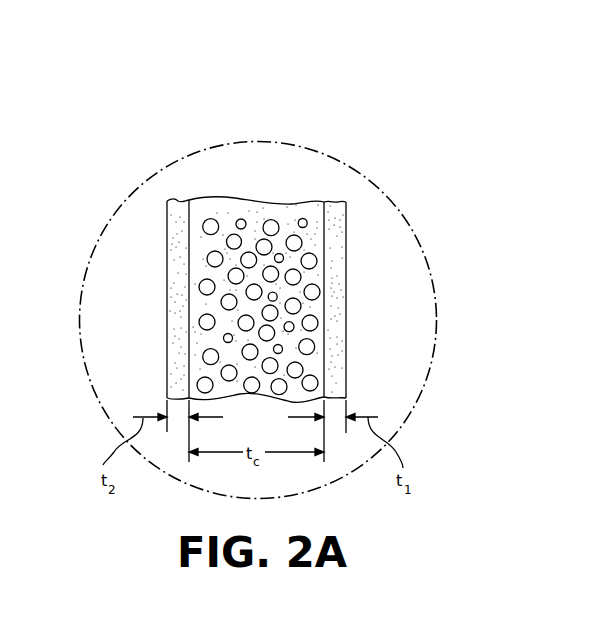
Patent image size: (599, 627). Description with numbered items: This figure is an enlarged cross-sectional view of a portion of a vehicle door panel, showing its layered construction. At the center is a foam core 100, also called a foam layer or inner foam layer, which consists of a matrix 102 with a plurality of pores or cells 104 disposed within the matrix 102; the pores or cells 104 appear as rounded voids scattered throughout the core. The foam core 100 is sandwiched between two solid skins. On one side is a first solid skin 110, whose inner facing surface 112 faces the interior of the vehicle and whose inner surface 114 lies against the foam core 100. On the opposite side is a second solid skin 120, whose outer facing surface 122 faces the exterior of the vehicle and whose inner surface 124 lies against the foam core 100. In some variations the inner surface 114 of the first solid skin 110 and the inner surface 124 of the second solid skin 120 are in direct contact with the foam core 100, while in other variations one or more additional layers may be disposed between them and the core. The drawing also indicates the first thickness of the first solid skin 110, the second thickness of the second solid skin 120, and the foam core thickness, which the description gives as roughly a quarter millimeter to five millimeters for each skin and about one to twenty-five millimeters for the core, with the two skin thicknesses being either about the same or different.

The foam core 100 is at (282, 193).
The matrix 102 is at (227, 211).
The pores or cells 104 is at (303, 218).
The first solid skin 110 is at (335, 193).
The inner facing surface 112 is at (346, 278).
The inner surface of first solid skin 114 is at (325, 260).
The second solid skin 120 is at (181, 197).
The outer facing surface 122 is at (167, 250).
The inner surface of second solid skin 124 is at (190, 327).